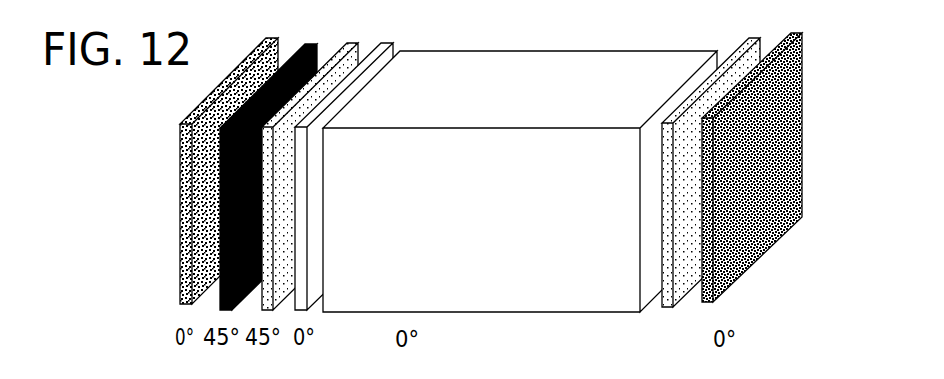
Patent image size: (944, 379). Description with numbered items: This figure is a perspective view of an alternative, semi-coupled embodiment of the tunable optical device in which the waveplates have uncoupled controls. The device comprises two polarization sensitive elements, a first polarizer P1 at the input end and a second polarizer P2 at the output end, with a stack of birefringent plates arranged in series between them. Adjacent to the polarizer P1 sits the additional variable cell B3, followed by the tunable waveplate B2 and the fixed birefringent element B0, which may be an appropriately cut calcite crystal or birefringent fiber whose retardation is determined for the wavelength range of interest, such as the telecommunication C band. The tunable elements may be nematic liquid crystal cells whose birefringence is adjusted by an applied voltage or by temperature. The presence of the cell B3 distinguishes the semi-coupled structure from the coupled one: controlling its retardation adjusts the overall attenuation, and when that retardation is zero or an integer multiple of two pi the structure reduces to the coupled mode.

The polarizer P1 is at (229, 152).
The variable birefringent waveplate B3 is at (268, 155).
The variable birefringent waveplate B2 is at (344, 155).
The fixed birefringent waveplate B0 is at (520, 156).
The polarizer P2 is at (758, 154).